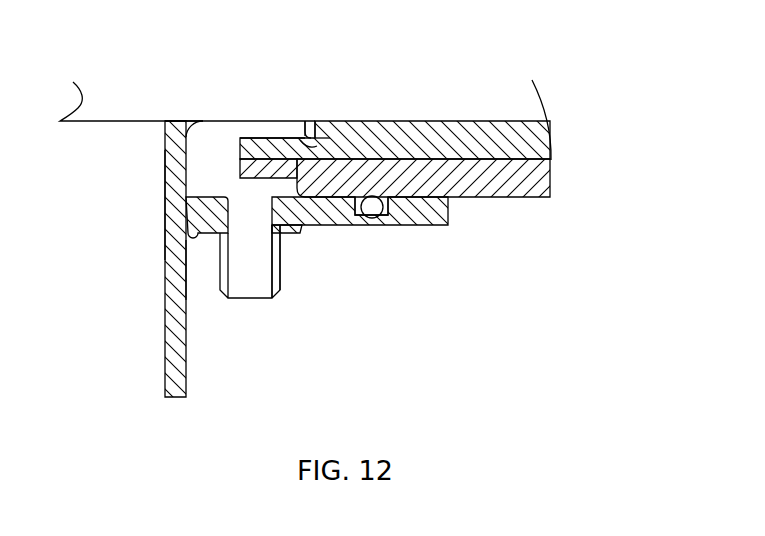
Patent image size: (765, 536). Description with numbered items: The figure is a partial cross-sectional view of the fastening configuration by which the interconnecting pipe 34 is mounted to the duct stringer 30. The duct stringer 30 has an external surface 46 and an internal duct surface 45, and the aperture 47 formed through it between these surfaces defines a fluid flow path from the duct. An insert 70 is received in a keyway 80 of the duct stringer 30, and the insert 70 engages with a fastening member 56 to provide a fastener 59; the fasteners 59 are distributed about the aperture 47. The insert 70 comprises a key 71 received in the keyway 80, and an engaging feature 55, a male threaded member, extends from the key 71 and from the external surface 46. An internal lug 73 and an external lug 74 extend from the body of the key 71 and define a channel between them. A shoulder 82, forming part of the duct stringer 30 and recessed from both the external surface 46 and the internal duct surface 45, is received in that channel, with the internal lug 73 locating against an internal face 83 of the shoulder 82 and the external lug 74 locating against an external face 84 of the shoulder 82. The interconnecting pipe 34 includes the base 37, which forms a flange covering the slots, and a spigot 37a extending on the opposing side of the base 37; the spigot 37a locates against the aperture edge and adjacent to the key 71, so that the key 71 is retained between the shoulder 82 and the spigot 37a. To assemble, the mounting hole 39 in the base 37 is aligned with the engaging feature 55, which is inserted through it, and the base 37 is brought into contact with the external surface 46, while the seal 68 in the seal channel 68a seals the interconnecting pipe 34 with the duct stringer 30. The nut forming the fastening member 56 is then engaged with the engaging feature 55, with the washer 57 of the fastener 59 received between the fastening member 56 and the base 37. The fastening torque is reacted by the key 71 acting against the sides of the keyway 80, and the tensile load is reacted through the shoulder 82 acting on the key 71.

The duct stringer 30 is at (552, 172).
The interconnecting pipe 34 is at (170, 343).
The base 37 is at (430, 213).
The spigot 37a is at (183, 133).
The mounting hole 39 is at (183, 270).
The internal duct surface 45 is at (493, 119).
The external surface 46 is at (513, 200).
The aperture 47 is at (128, 208).
The engaging feature 55 is at (262, 298).
The fastening member 56 is at (277, 273).
The washer 57 is at (303, 230).
The fastener 59 is at (275, 322).
The seal 68 is at (372, 200).
The seal channel 68a is at (390, 212).
The insert 70 is at (203, 127).
The key 71 is at (193, 155).
The internal lug 73 is at (248, 133).
The external lug 74 is at (320, 150).
The keyway 80 is at (310, 121).
The shoulder 82 is at (277, 152).
The internal face 83 is at (240, 163).
The external face 84 is at (268, 180).